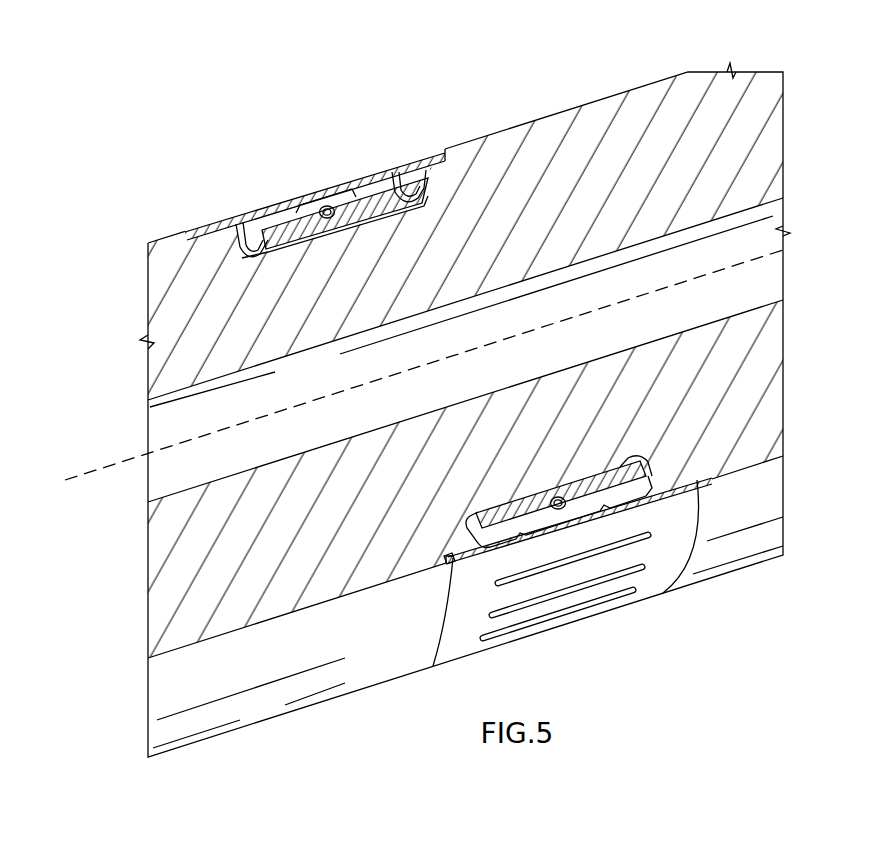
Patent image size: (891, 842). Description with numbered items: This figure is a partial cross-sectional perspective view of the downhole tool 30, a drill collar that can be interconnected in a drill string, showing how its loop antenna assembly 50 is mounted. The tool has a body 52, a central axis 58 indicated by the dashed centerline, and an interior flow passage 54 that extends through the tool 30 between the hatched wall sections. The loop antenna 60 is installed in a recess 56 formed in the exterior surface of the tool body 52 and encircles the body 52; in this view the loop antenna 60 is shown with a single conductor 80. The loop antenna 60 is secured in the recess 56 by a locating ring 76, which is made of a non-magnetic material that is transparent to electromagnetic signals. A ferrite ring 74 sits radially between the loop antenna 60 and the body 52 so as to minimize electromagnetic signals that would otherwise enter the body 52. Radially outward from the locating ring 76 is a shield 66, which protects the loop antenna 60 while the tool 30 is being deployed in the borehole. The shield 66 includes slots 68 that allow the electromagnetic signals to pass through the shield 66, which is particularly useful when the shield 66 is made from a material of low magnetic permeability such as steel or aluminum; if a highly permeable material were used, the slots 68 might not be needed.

The downhole tool 30 is at (830, 97).
The antenna assembly 50 is at (206, 218).
The body 52 is at (751, 393).
The interior flow passage 54 is at (503, 375).
The recess 56 is at (283, 256).
The central axis 58 is at (89, 471).
The loop antenna 60 is at (325, 204).
The shield 66 is at (447, 556).
The slots 68 is at (352, 186).
The ferrite ring 74 is at (347, 228).
The locating ring 76 is at (430, 200).
The conductor 80 is at (305, 202).